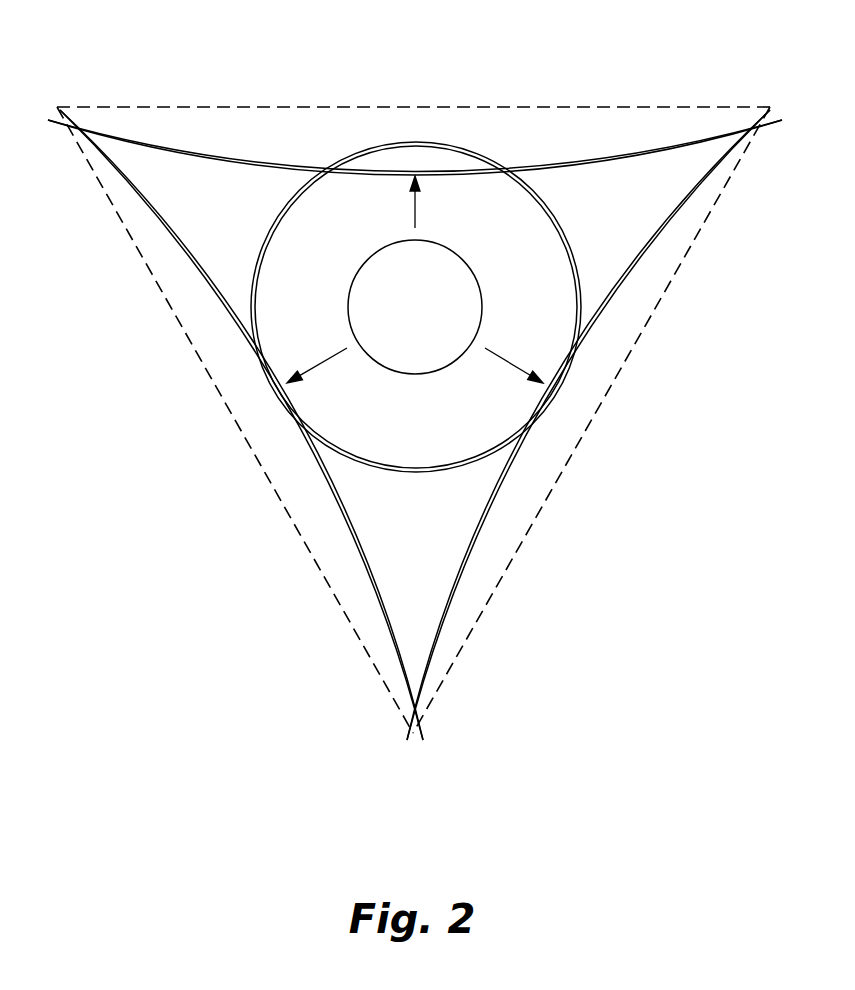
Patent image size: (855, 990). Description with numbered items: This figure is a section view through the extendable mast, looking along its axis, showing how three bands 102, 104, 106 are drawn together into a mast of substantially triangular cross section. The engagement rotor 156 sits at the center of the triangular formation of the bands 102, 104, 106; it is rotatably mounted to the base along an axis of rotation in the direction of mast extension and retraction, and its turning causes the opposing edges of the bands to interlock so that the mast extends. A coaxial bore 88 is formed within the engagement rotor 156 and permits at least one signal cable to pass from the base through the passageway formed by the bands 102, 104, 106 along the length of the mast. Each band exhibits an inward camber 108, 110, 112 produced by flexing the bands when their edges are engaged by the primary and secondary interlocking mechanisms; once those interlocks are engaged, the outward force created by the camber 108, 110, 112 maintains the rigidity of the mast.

The coaxial bore 88 is at (434, 322).
The band 102 is at (190, 156).
The band 104 is at (376, 578).
The band 106 is at (660, 213).
The inward camber 108 is at (231, 413).
The inward camber 110 is at (596, 418).
The inward camber 112 is at (413, 104).
The engagement rotor 156 is at (362, 466).